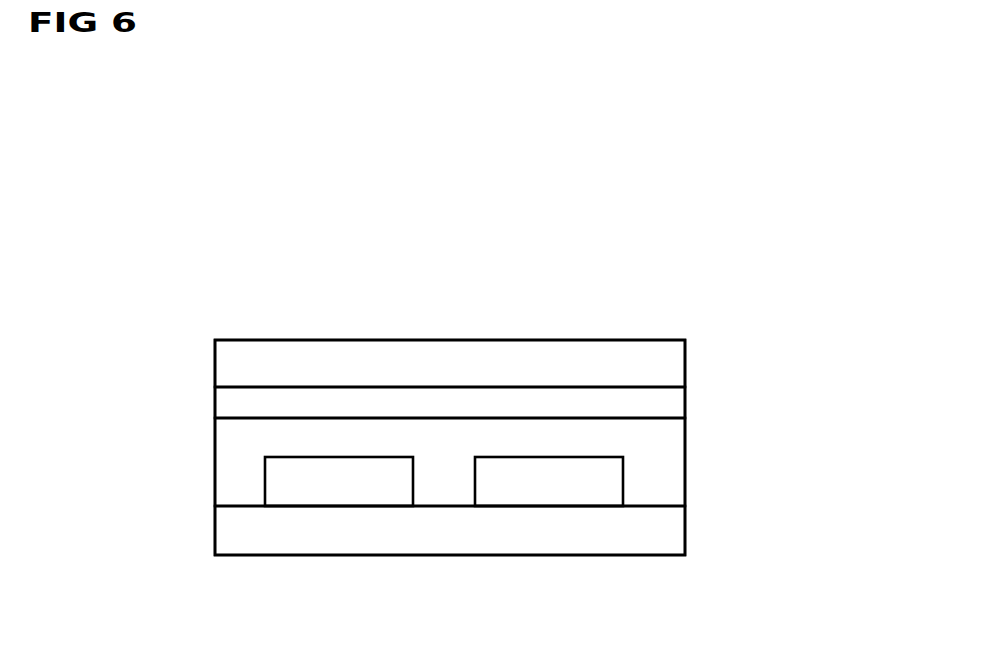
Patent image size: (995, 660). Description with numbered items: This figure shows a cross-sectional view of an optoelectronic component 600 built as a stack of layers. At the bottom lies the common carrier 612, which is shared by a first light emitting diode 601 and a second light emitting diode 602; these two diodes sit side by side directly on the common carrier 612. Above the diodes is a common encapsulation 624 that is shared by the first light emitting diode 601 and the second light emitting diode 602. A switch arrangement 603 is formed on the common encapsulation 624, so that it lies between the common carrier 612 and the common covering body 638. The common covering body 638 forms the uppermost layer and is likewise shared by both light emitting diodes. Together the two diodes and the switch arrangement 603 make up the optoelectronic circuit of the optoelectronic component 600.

The optoelectronic component 600 is at (686, 223).
The common covering body 638 is at (598, 347).
The switch arrangement 603 is at (226, 407).
The common encapsulation 624 is at (672, 433).
The first light emitting diode 601 is at (283, 493).
The second light emitting diode 602 is at (613, 492).
The common carrier 612 is at (265, 545).